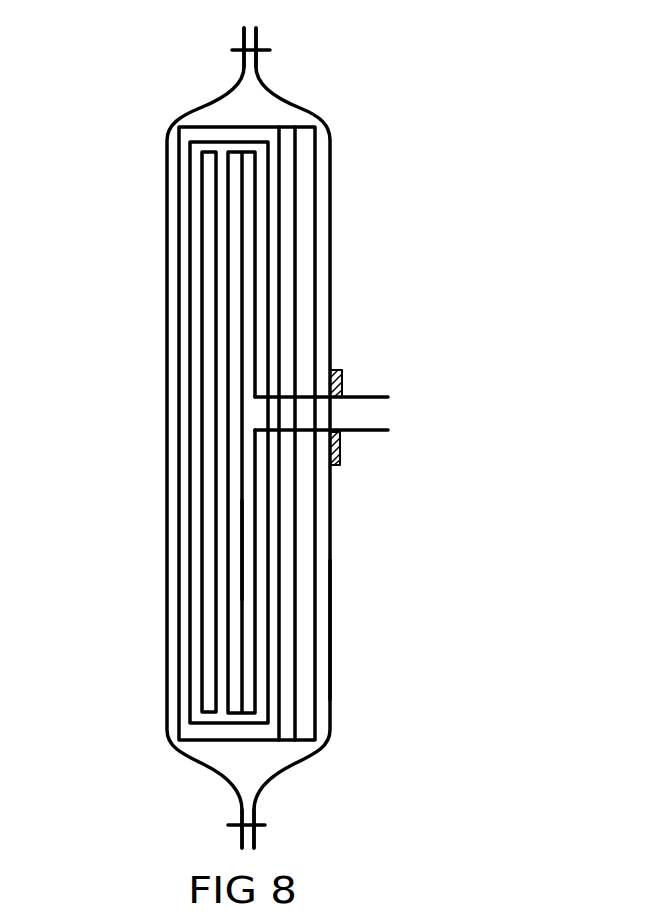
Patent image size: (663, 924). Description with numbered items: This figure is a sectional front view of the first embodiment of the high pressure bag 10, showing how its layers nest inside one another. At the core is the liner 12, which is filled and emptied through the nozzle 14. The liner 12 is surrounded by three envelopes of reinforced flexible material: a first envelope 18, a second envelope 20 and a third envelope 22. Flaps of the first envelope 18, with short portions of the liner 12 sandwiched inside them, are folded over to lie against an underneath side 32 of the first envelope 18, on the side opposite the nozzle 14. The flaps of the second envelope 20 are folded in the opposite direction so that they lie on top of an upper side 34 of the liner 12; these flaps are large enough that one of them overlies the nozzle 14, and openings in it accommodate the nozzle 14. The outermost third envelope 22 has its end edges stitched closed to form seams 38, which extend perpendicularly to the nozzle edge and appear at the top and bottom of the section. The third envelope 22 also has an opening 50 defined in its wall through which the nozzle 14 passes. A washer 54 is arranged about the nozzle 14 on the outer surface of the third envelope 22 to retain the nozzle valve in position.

The high pressure bag 10 is at (478, 222).
The liner 12 is at (255, 483).
The nozzle 14 is at (374, 397).
The first envelope 18 is at (267, 582).
The second envelope 20 is at (318, 191).
The third envelope 22 is at (328, 615).
The underneath side 32 is at (215, 361).
The upper side 34 is at (280, 547).
The seams 38 is at (266, 49).
The opening 50 is at (356, 380).
The washer 54 is at (340, 442).